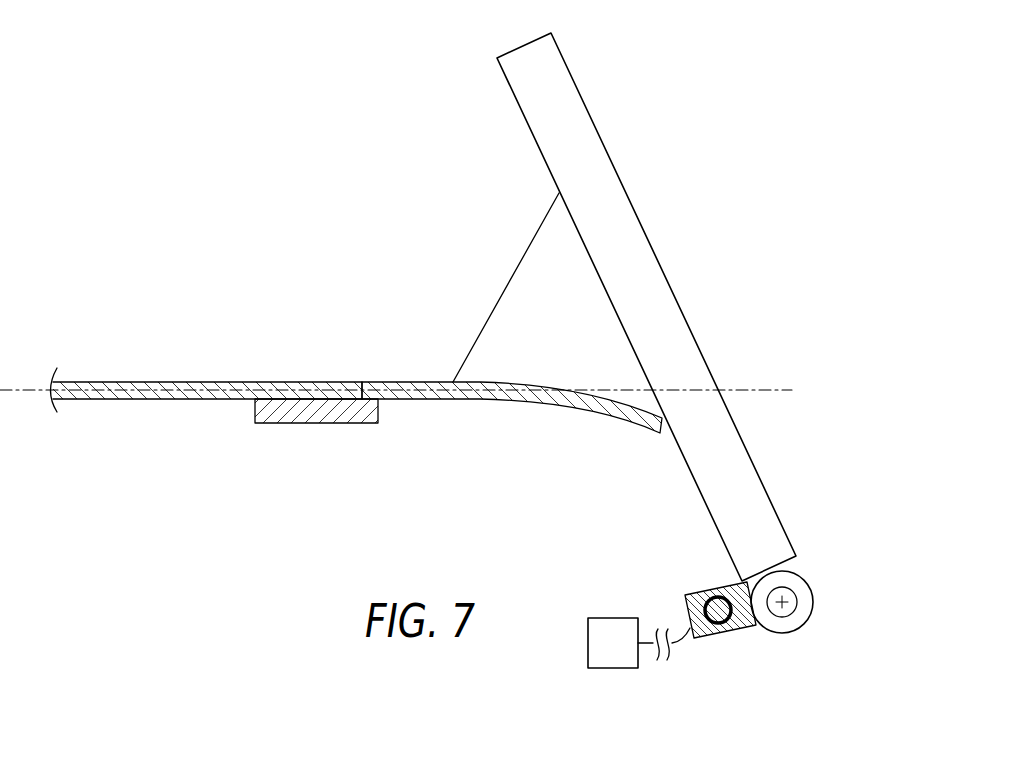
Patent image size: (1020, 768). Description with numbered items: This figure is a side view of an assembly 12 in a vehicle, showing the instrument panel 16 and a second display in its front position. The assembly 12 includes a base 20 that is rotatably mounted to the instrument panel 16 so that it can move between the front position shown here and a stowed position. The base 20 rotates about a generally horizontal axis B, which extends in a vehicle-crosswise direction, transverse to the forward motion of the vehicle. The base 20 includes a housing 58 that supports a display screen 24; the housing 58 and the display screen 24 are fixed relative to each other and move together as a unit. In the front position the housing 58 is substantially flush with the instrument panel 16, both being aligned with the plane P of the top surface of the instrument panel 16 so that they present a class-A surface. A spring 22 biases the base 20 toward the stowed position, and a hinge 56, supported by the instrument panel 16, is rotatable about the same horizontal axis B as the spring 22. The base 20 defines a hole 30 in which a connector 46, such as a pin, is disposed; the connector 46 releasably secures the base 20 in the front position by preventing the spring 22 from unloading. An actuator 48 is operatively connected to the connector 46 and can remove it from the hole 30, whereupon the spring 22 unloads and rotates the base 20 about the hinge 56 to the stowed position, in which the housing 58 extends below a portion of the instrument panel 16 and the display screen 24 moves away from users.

The assembly 12 is at (235, 103).
The instrument panel 16 is at (118, 382).
The housing 58 is at (413, 382).
The base 20 is at (530, 442).
The display screen 24 is at (630, 200).
The hole 30 is at (692, 602).
The connector 46 is at (720, 616).
The spring 22 is at (805, 590).
The hinge 56 is at (790, 583).
The horizontal axis B is at (790, 608).
The actuator 48 is at (603, 668).
The plane P is at (405, 391).